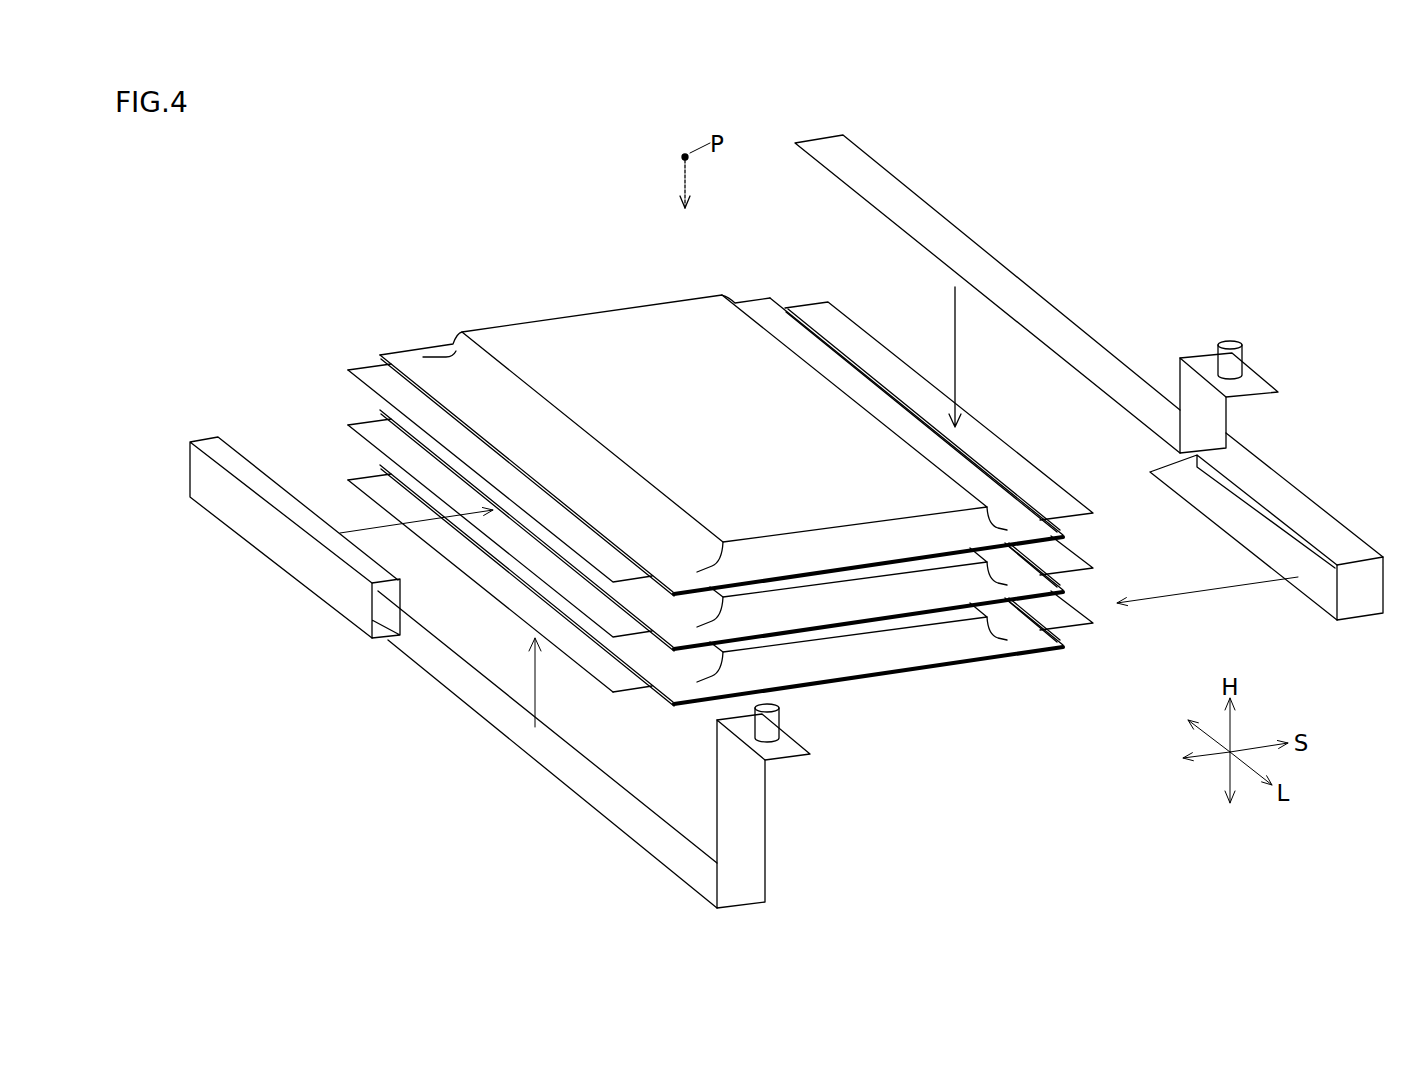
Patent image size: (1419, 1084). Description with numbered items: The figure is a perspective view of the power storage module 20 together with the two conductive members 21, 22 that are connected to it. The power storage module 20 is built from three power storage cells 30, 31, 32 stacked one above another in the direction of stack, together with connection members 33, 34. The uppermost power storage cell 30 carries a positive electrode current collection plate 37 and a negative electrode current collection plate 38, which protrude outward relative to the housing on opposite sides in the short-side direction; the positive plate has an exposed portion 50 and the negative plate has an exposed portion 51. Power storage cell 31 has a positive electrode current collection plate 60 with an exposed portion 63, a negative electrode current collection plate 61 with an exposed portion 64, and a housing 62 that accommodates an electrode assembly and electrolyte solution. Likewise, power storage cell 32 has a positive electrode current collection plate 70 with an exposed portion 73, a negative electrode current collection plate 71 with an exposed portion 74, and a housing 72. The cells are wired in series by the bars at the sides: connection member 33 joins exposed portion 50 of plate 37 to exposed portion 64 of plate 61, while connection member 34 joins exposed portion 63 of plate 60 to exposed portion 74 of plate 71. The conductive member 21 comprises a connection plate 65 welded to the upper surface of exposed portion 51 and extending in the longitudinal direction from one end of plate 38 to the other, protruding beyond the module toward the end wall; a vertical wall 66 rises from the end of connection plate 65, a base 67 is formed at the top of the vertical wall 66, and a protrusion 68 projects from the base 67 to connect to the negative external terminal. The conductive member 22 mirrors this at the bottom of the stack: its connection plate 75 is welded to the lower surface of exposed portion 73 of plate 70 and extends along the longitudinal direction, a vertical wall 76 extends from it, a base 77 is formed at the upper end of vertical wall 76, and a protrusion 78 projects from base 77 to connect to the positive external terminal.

The power storage module 20 is at (537, 283).
The conductive member 21 is at (1135, 314).
The conductive member 22 is at (532, 790).
The power storage cell 30 is at (704, 298).
The power storage cell 31 is at (938, 590).
The power storage cell 32 is at (894, 673).
The connection member 33 is at (330, 596).
The connection member 34 is at (1348, 547).
The positive electrode current collection plate 37 is at (475, 454).
The negative electrode current collection plate 38 is at (1083, 504).
The exposed portion 50 is at (362, 372).
The exposed portion 51 is at (1047, 478).
The positive electrode current collection plate 60 is at (1077, 568).
The negative electrode current collection plate 61 is at (475, 518).
The housing 62 is at (721, 590).
The exposed portion 63 is at (1072, 558).
The exposed portion 64 is at (368, 427).
The connection plate 65 is at (1012, 296).
The vertical wall 66 is at (1246, 376).
The base 67 is at (1262, 389).
The protrusion 68 is at (1233, 343).
The positive electrode current collection plate 70 is at (475, 583).
The negative electrode current collection plate 71 is at (1083, 617).
The housing 72 is at (721, 622).
The exposed portion 73 is at (518, 622).
The exposed portion 74 is at (1068, 604).
The connection plate 75 is at (636, 805).
The vertical wall 76 is at (793, 806).
The base 77 is at (806, 757).
The protrusion 78 is at (780, 718).